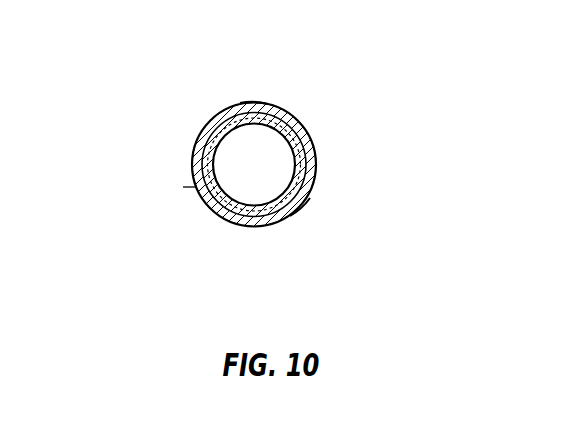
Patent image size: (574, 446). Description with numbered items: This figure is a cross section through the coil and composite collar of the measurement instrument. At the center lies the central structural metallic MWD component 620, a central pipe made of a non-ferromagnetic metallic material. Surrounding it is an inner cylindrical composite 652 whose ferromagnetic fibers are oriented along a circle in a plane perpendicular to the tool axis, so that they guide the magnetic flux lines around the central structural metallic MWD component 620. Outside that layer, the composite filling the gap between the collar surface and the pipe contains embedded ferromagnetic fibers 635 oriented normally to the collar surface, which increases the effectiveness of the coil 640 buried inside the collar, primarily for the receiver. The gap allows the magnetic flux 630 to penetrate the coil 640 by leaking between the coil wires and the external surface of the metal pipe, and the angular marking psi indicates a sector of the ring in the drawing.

The central structural metallic MWD component 620 is at (209, 122).
The magnetic flux 630 is at (333, 127).
The embedded ferromagnetic fibers 635 is at (256, 105).
The coil 640 is at (302, 207).
The inner cylindrical composite 652 is at (203, 149).
The angle Ψ psi is at (317, 139).